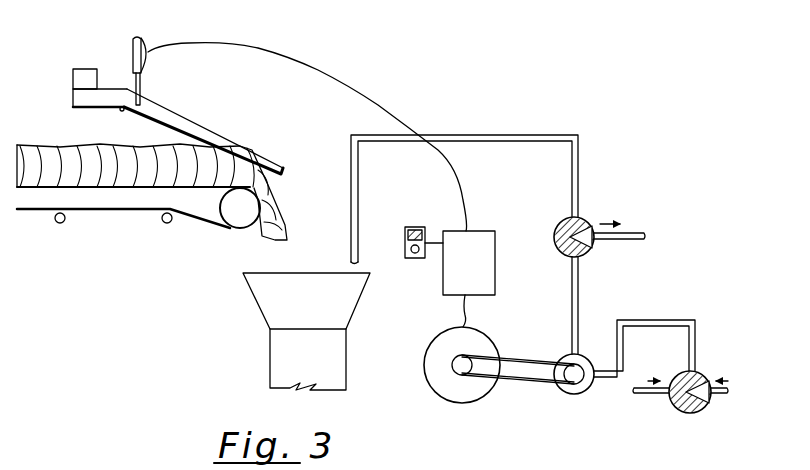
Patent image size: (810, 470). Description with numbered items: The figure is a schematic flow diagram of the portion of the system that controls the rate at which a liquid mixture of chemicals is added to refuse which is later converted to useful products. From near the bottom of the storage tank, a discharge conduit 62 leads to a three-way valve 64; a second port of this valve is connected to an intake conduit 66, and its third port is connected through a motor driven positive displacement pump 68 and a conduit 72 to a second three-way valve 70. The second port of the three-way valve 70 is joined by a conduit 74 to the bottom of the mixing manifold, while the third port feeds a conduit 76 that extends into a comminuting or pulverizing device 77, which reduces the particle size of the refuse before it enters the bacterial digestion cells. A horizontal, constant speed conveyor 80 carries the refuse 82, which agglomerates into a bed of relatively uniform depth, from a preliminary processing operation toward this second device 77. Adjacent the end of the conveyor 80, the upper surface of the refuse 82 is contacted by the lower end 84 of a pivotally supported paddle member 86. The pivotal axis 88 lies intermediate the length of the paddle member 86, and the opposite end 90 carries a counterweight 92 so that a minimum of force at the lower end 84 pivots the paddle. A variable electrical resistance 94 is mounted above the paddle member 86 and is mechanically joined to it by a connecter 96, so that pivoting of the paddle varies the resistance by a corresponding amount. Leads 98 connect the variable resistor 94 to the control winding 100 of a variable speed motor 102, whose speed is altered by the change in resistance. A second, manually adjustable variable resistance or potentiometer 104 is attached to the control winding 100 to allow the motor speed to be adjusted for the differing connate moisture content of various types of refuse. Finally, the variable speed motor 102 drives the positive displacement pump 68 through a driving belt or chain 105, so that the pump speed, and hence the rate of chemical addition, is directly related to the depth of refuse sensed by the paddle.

The discharge conduit 62 is at (718, 395).
The three-way valve 64 is at (684, 411).
The intake conduit 66 is at (648, 397).
The positive displacement pump 68 is at (578, 391).
The three-way valve 70 is at (566, 221).
The conduit 72 is at (571, 296).
The conduit 74 is at (633, 233).
The conduit 76 is at (547, 135).
The comminuting or pulverizing device 77 is at (258, 285).
The conveyor 80 is at (87, 210).
The refuse 82 is at (54, 144).
The lower end of paddle member 84 is at (280, 168).
The paddle member 86 is at (182, 112).
The pivotal axis 88 is at (122, 111).
The end of paddle member 90 is at (88, 100).
The counterweight 92 is at (75, 68).
The variable electrical resistance 94 is at (137, 37).
The connecter 96 is at (142, 90).
The leads 98 is at (278, 48).
The control winding 100 is at (485, 241).
The variable speed motor 102 is at (437, 358).
The variable resistance or potentiometer 104 is at (404, 238).
The driving belt or chain 105 is at (522, 382).